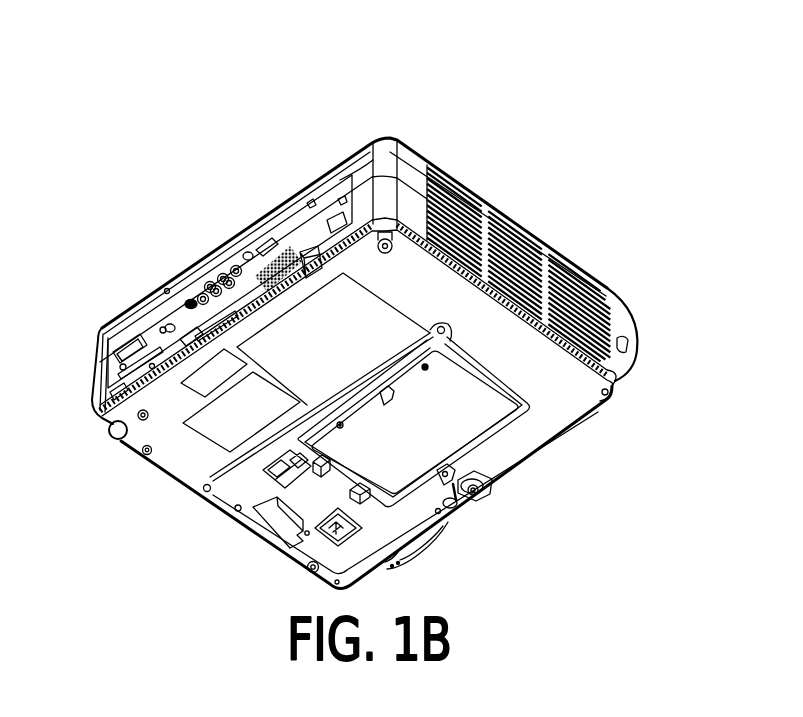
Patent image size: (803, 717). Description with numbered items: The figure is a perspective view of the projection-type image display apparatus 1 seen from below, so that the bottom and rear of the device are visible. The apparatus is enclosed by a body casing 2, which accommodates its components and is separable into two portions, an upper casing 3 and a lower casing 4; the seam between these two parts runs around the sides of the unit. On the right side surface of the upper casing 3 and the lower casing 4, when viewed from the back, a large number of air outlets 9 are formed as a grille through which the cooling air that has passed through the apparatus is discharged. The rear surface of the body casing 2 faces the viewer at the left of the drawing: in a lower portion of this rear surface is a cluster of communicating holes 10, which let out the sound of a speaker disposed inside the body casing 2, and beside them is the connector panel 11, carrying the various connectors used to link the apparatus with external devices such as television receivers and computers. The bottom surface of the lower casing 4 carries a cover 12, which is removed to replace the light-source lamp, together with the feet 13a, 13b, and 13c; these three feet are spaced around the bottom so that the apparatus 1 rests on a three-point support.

The projection-type image display apparatus 1 is at (519, 167).
The body casing 2 is at (470, 84).
The upper casing 3 is at (403, 163).
The lower casing 4 is at (410, 217).
The air outlets 9 is at (580, 277).
The communicating holes 10 is at (283, 260).
The connector panel 11 is at (140, 333).
The cover 12 is at (477, 407).
The foot 13a is at (480, 500).
The foot 13b is at (343, 280).
The foot 13c is at (127, 435).